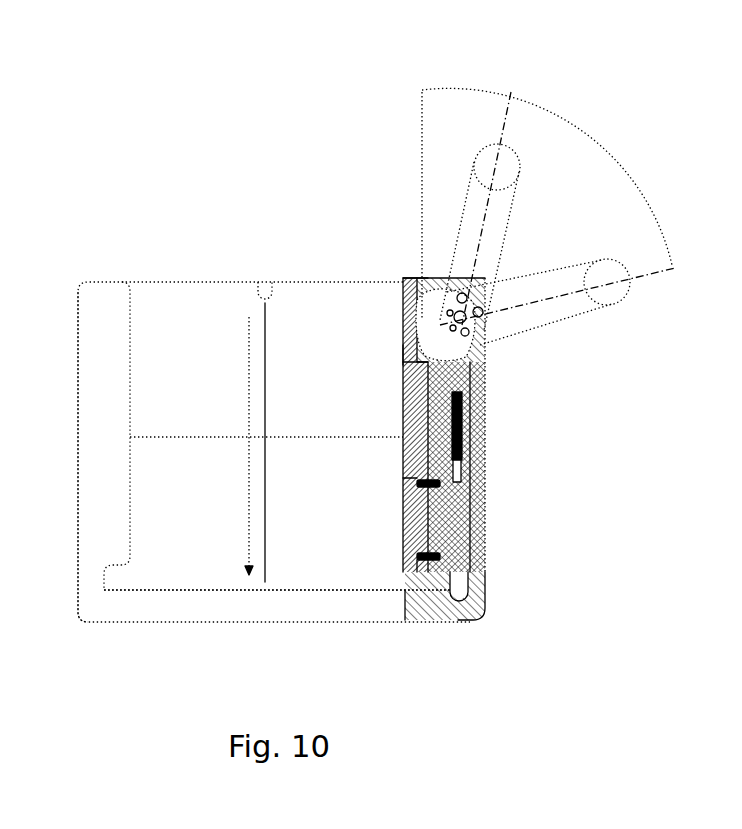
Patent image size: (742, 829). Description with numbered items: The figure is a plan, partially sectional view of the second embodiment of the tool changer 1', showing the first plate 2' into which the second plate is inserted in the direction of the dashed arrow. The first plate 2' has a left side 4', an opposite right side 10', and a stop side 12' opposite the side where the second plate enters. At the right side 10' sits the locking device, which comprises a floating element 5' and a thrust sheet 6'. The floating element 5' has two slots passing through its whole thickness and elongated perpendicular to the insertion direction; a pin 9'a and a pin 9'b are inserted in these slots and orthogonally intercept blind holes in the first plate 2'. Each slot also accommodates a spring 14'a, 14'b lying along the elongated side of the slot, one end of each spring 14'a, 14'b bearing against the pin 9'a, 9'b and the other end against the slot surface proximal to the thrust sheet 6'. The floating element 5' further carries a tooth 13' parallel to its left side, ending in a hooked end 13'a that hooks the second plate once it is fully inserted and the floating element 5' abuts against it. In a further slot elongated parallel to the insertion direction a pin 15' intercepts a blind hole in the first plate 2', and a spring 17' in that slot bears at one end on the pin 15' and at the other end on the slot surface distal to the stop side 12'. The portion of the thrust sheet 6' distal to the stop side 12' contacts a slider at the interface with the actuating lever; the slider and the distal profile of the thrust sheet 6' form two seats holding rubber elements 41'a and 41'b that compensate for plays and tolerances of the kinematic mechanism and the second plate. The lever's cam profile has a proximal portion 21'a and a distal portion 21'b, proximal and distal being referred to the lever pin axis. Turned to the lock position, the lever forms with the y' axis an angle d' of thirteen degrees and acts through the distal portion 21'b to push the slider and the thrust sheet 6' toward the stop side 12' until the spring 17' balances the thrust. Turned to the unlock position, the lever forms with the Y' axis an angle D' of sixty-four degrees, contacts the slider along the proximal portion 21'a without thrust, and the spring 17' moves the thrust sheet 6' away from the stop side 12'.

The tool changer 1' is at (281, 189).
The first plate 2' is at (274, 488).
The left side 4' is at (94, 479).
The floating element 5' is at (489, 425).
The thrust sheet 6' is at (534, 467).
The pin 9'a is at (418, 615).
The pin 9'b is at (370, 568).
The right side 10' is at (469, 598).
The stop side 12' is at (277, 641).
The tooth 13' is at (364, 395).
The hooked end 13'a is at (369, 222).
The spring 14'a is at (447, 642).
The spring 14'b is at (384, 600).
The pin 15' is at (521, 463).
The spring 17' is at (513, 426).
The proximal portion of the cam profile 21'a is at (596, 310).
The distal portion of the cam profile 21'b is at (390, 222).
The rubber element 41'a is at (540, 358).
The rubber element 41'b is at (320, 291).
The y' axis y' is at (420, 190).
The Y' axis Y' is at (498, 193).
The angle d' is at (480, 214).
The angle D' is at (548, 216).